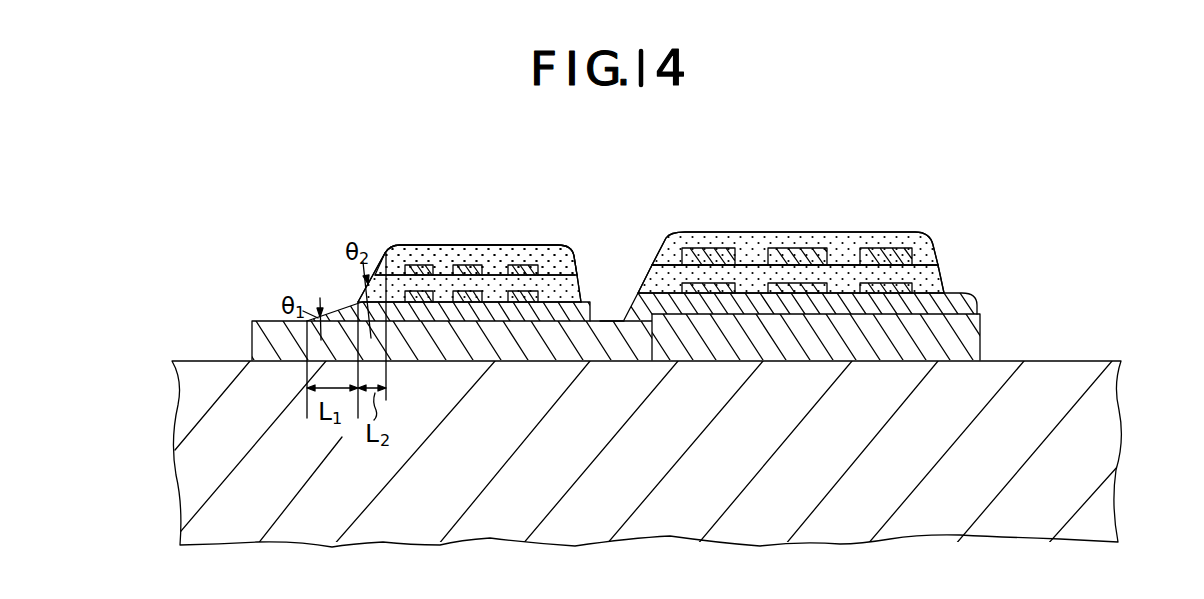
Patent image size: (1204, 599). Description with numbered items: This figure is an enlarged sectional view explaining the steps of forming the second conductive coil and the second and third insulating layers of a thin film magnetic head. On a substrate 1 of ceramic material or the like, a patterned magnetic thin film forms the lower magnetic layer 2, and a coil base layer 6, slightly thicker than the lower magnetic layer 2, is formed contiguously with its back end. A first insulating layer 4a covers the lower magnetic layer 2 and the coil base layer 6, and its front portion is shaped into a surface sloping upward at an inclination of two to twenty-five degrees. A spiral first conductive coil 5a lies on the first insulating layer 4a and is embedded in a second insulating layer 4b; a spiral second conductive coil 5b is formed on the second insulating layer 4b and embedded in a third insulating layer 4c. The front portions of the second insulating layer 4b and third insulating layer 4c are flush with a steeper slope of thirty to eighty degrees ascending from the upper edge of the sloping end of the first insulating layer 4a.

The substrate 1 is at (1098, 425).
The lower magnetic layer 2 is at (620, 321).
The first insulating layer 4a is at (346, 316).
The second insulating layer 4b is at (366, 293).
The third insulating layer 4c is at (400, 250).
The first conductive coil 5a is at (523, 300).
The second conductive coil 5b is at (513, 268).
The coil base layer 6 is at (970, 341).